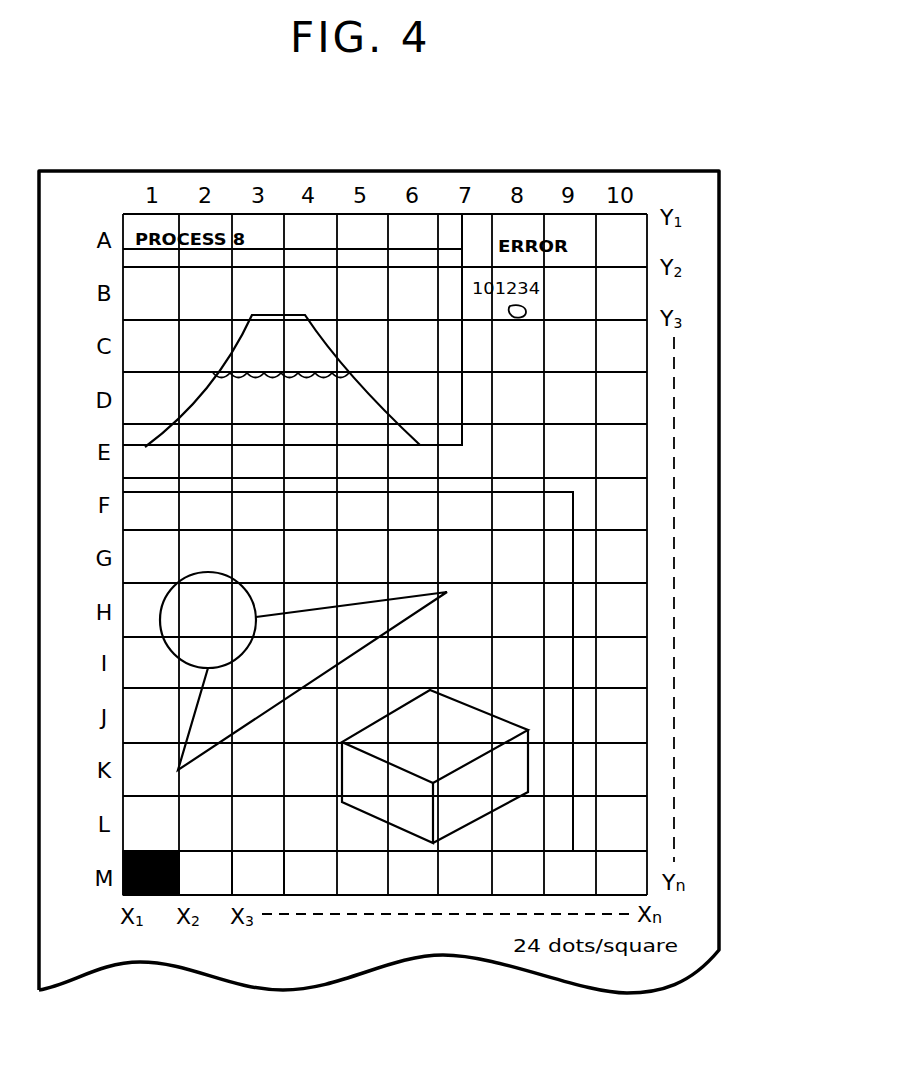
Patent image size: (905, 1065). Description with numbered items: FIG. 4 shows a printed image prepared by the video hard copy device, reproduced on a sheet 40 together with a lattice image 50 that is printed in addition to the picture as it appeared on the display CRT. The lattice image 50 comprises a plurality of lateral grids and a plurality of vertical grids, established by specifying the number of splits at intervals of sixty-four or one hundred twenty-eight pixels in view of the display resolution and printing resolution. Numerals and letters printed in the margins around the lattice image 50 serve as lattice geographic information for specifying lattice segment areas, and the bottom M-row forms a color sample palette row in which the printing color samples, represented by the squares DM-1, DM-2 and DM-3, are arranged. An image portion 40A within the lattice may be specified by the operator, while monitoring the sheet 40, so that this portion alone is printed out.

The sheet 40 is at (719, 343).
The image portion 40A is at (573, 602).
The lattice image 50 is at (602, 452).
The dot matrix square M1 DM-1 is at (160, 895).
The dot matrix square M2 DM-2 is at (212, 887).
The dot matrix square M3 DM-3 is at (270, 887).